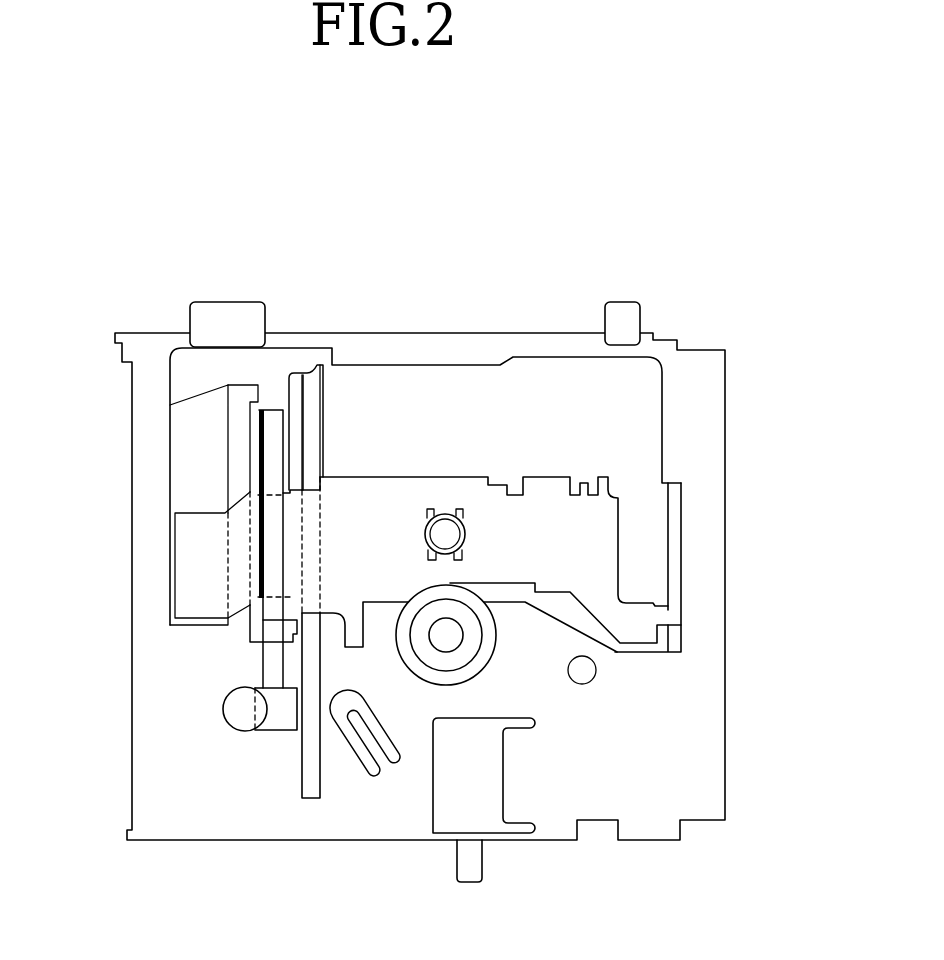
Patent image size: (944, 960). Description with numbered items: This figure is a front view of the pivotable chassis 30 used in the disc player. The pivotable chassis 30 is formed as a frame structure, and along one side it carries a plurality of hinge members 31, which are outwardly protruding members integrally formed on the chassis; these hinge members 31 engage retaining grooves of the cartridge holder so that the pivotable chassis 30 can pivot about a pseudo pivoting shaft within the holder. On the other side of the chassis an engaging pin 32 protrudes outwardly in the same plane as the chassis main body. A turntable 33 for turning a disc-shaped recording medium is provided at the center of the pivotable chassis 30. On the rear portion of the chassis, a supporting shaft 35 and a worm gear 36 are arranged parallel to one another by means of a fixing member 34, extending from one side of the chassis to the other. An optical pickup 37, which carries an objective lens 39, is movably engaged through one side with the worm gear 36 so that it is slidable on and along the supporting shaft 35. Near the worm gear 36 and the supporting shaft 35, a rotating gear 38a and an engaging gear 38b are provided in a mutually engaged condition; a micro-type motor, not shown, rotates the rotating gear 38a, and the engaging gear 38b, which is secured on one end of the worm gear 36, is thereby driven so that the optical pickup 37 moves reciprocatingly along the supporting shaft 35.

The pivotable chassis 30 is at (718, 525).
The hinge member 31 is at (230, 312).
The engaging pin 32 is at (476, 861).
The turntable 33 is at (460, 645).
The fixing member 34 is at (295, 358).
The supporting shaft 35 is at (312, 415).
The worm gear 36 is at (273, 443).
The optical pickup 37 is at (545, 498).
The rotating gear 38a is at (232, 708).
The engaging gear 38b is at (277, 723).
The objective lens 39 is at (443, 527).